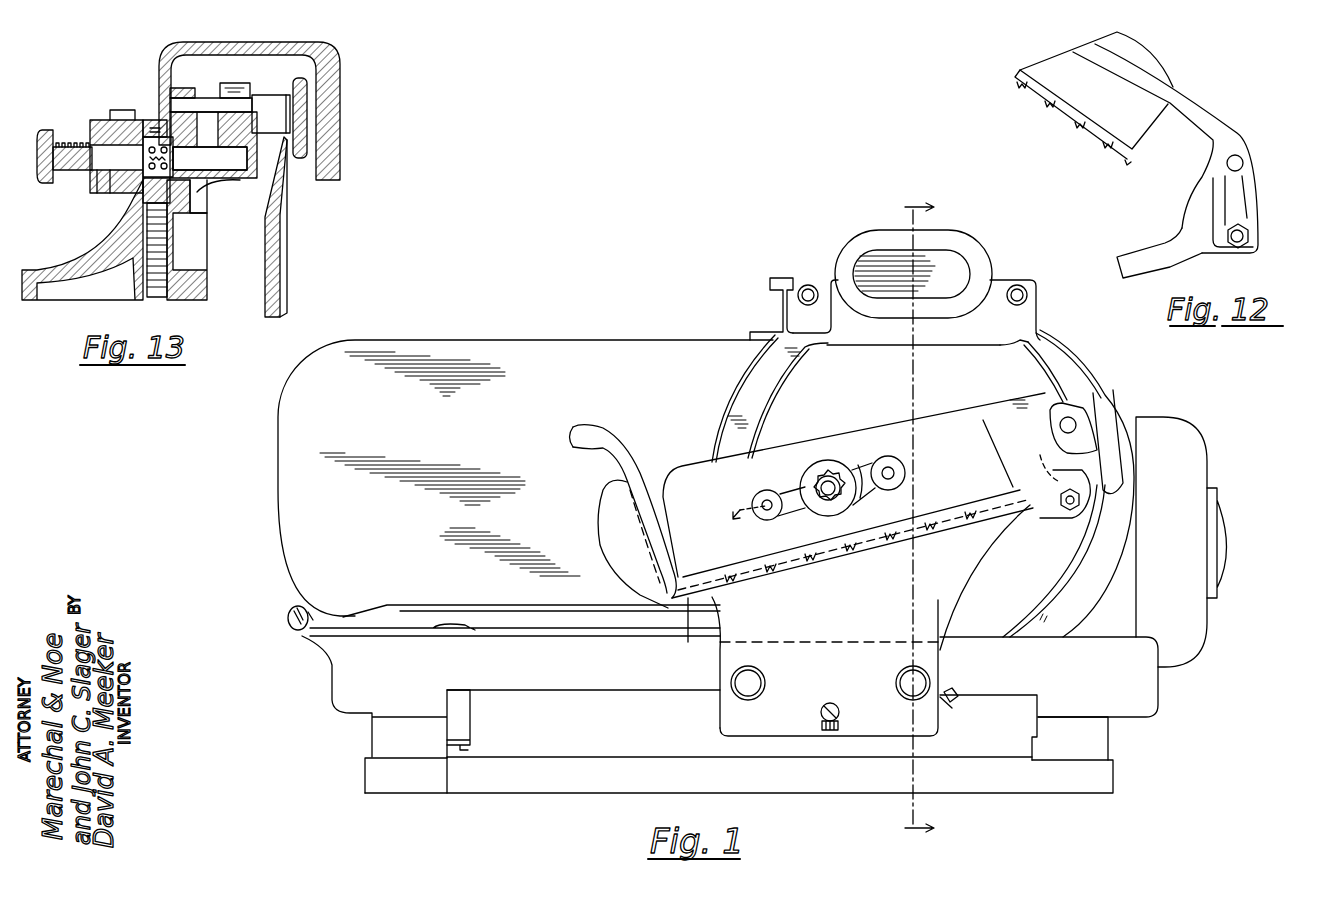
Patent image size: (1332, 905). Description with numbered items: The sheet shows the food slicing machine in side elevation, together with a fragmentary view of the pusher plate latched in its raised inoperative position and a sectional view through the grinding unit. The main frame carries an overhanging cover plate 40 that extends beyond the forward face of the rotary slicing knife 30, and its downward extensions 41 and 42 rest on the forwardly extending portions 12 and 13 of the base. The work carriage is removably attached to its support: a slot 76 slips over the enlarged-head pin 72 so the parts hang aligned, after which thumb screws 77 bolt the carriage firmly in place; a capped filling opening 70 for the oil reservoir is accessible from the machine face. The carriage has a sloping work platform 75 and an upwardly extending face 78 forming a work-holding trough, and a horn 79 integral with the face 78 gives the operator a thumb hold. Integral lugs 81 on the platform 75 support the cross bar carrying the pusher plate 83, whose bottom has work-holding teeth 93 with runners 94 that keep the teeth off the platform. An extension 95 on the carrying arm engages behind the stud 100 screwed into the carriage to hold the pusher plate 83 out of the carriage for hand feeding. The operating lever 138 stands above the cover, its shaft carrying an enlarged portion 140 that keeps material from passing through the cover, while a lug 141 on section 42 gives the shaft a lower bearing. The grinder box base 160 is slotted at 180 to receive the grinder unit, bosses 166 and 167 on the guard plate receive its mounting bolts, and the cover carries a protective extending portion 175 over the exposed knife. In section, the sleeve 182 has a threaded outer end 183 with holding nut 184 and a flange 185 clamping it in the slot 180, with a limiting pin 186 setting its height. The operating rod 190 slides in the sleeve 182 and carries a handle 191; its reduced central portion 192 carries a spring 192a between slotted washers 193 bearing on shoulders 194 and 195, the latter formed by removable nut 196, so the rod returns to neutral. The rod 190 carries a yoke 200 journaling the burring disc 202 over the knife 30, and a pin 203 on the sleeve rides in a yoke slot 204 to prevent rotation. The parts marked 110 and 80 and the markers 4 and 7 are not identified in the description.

In FIG. 1, the cover 110 is at (298, 487).
In FIG. 1, the boss 166 is at (806, 285).
In FIG. 1, the boss 167 is at (1020, 290).
In FIG. 1, the protective extending portion 175 is at (765, 330).
In FIG. 1, the section line 4 is at (930, 518).
In FIG. 1, the horn 79 is at (572, 437).
In FIG. 1, the handle 80 is at (603, 497).
In FIG. 1, the upwardly extending face 78 is at (653, 527).
In FIG. 1, the pusher plate 83 is at (695, 477).
In FIG. 1, the section indicator 7 is at (745, 524).
In FIG. 1, the work platform 75 is at (885, 565).
In FIG. 12, the work platform 75 is at (1133, 258).
In FIG. 1, the work holding teeth 93 is at (830, 575).
In FIG. 1, the runners 94 is at (668, 606).
In FIG. 1, the lugs 81 is at (1075, 425).
In FIG. 1, the thumb screws 77 is at (731, 680).
In FIG. 1, the pin 72 is at (835, 705).
In FIG. 1, the slot 76 is at (822, 732).
In FIG. 1, the capped filling opening 70 is at (955, 698).
In FIG. 1, the cover plate 40 is at (1148, 685).
In FIG. 1, the downward extension 41 is at (1098, 745).
In FIG. 1, the forwardly extending portion 12 is at (1085, 790).
In FIG. 1, the forwardly extending portion 13 is at (418, 780).
In FIG. 1, the downward extension 42 is at (368, 730).
In FIG. 1, the lug 141 is at (460, 738).
In FIG. 1, the extended portion 140 is at (478, 628).
In FIG. 1, the operating lever 138 is at (288, 630).
In FIG. 12, the extension 95 is at (1237, 207).
In FIG. 12, the stud 100 is at (1232, 250).
In FIG. 13, the burring disc 202 is at (300, 160).
In FIG. 13, the yoke 200 is at (252, 100).
In FIG. 13, the slot 204 is at (237, 85).
In FIG. 13, the pin 203 is at (200, 100).
In FIG. 13, the sleeve 182 is at (195, 180).
In FIG. 13, the flange 185 is at (193, 190).
In FIG. 13, the removable nut 196 is at (208, 180).
In FIG. 13, the shoulder 195 is at (178, 157).
In FIG. 13, the slotted washer 193 is at (166, 148).
In FIG. 13, the central portion 192 is at (147, 120).
In FIG. 13, the spring 192a is at (157, 127).
In FIG. 13, the threaded outer end 183 is at (95, 125).
In FIG. 13, the shoulder 194 is at (133, 127).
In FIG. 13, the operating rod 190 is at (113, 187).
In FIG. 13, the holding nut 184 is at (97, 187).
In FIG. 13, the handle 191 is at (43, 182).
In FIG. 13, the slot 180 is at (150, 193).
In FIG. 13, the grinder box base 160 is at (50, 293).
In FIG. 13, the limiting pin 186 is at (170, 237).
In FIG. 13, the rotary slicing knife 30 is at (280, 280).